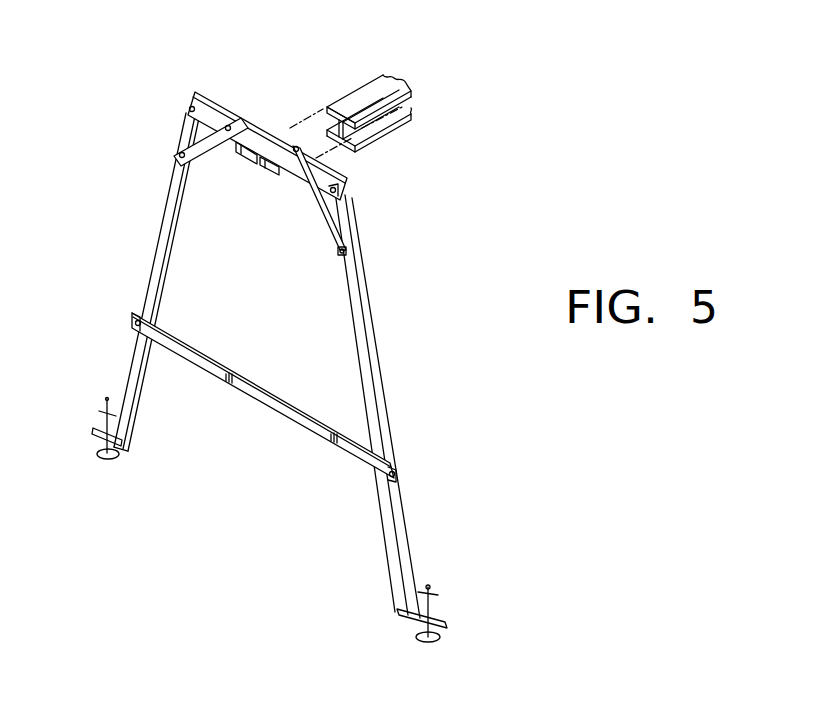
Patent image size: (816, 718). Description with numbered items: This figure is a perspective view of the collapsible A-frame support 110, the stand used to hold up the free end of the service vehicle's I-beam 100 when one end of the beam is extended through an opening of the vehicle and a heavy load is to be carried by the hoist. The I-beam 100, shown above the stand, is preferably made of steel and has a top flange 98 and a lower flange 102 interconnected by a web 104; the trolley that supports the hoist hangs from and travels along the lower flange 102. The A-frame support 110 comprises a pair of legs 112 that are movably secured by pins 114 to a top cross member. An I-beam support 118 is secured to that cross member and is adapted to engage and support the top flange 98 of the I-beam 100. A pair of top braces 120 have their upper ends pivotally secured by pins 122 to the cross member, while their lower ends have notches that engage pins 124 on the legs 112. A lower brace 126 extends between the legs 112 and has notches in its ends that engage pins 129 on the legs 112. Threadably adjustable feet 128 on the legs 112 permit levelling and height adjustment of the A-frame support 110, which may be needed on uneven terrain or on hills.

The top flange 98 is at (392, 111).
The I-beam 100 is at (363, 111).
The lower flange 102 is at (369, 113).
The web 104 is at (357, 141).
The collapsible A-frame support 110 is at (253, 361).
The legs 112 is at (153, 292).
The pins 114 is at (189, 107).
The I-beam support 118 is at (254, 167).
The top braces 120 is at (207, 152).
The pins 122 is at (296, 145).
The pins 124 is at (179, 157).
The lower brace 126 is at (278, 413).
The threadably adjustable feet 128 is at (104, 413).
The pins 129 is at (133, 324).